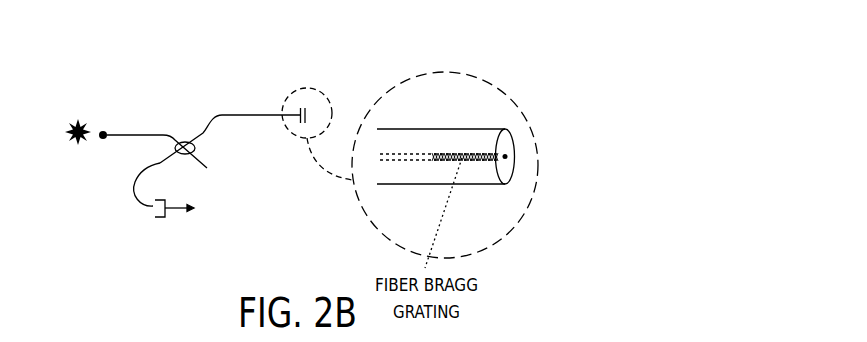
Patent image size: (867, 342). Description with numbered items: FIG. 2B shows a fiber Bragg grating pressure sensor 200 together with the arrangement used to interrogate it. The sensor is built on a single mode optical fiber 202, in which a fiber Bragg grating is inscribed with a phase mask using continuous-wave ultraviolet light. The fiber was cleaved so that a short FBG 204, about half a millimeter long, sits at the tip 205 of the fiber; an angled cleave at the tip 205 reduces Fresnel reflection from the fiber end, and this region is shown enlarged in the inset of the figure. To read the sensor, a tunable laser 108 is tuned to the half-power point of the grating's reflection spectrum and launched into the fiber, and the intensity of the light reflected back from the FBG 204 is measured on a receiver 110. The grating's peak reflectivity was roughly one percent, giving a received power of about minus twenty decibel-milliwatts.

The fiber Bragg grating sensor 200 is at (161, 84).
The laser 108 is at (74, 143).
The receiver 110 is at (156, 221).
The single mode optical fiber 202 is at (420, 129).
The FBG 204 is at (478, 155).
The tip 205 is at (485, 185).